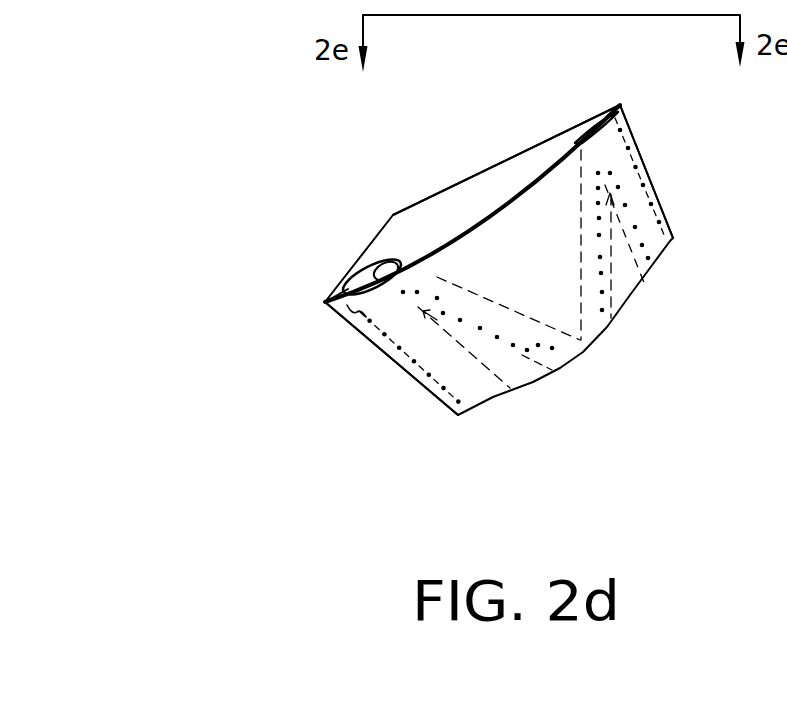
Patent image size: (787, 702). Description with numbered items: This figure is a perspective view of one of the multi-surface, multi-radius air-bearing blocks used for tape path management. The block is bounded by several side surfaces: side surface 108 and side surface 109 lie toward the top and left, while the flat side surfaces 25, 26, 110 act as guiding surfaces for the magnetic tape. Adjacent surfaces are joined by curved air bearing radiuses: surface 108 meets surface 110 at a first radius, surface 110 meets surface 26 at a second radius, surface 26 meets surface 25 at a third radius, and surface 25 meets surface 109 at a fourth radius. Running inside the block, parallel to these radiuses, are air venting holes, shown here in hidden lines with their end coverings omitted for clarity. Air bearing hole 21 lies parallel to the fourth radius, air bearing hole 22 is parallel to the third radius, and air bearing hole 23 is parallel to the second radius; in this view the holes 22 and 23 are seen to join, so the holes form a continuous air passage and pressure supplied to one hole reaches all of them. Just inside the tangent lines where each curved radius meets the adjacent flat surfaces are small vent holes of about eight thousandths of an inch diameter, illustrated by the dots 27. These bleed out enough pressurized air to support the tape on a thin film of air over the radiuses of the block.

The air bearing hole 21 is at (427, 397).
The air bearing hole 22 is at (527, 358).
The air bearing hole 23 is at (613, 295).
The side surface 25 is at (352, 308).
The side surface 26 is at (513, 275).
The vent holes (dots) 27 is at (640, 157).
The side surface 108 is at (484, 170).
The side surface 109 is at (368, 246).
The side surface 110 is at (668, 210).